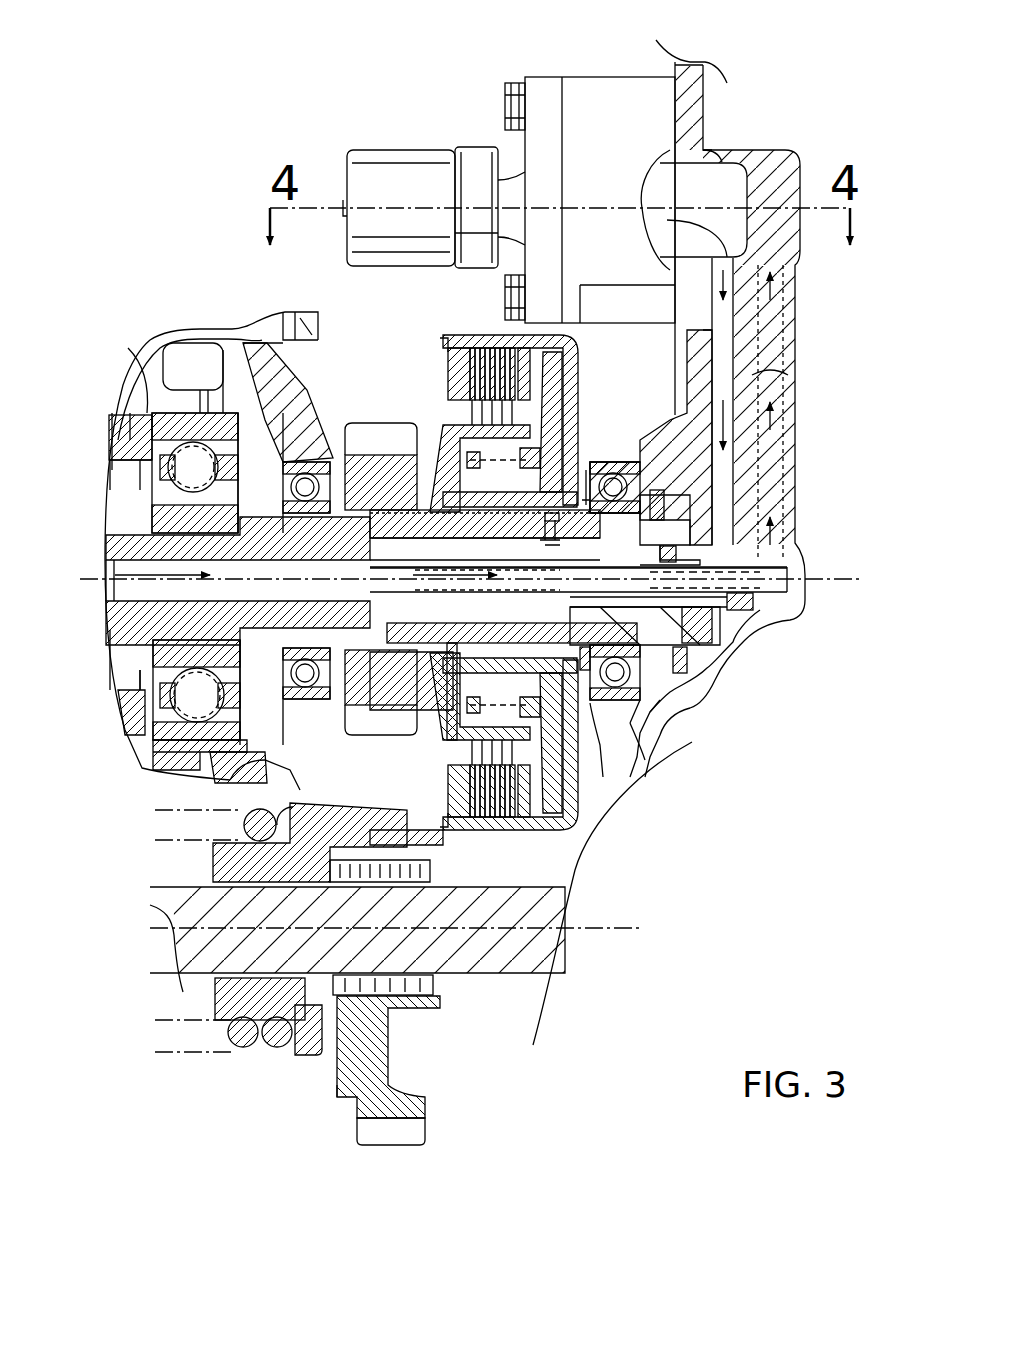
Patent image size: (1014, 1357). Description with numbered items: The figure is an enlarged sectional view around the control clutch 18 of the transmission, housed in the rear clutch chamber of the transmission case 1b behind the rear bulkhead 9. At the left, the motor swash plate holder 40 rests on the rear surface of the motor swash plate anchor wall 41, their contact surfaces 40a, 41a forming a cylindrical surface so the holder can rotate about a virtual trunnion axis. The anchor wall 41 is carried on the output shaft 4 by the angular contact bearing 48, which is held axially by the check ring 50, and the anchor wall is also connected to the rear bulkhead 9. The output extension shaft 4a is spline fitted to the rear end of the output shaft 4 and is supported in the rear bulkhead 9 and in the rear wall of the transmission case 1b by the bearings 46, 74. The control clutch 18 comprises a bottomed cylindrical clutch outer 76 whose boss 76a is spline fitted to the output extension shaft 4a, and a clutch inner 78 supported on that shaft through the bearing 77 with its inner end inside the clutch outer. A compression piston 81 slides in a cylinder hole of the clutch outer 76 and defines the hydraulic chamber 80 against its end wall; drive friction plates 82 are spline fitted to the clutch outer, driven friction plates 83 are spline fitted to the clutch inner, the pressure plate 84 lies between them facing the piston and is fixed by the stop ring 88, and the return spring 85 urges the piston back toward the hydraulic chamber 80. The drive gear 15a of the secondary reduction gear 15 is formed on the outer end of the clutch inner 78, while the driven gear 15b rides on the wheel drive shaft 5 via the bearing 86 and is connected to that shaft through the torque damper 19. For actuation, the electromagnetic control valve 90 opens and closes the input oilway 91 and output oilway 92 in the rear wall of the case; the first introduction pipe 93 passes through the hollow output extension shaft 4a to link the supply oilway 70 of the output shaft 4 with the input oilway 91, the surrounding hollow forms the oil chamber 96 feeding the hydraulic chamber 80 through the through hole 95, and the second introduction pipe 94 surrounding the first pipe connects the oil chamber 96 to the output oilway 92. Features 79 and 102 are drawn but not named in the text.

The transmission case 1b is at (690, 100).
The output shaft 4 is at (112, 547).
The output extension shaft 4a is at (717, 643).
The wheel drive shaft 5 is at (553, 960).
The rear bulkhead 9 is at (305, 332).
The secondary reduction gear 15 is at (405, 1147).
The drive gear 15a is at (360, 430).
The driven gear 15b is at (352, 1098).
The control clutch 18 is at (582, 385).
The torque damper 19 is at (257, 1052).
The motor swash plate holder 40 is at (130, 430).
The contact surface 40a is at (135, 400).
The motor swash plate anchor wall 41 is at (168, 358).
The contact surface 41a is at (115, 460).
The bearing 46 is at (300, 485).
The angular contact bearing 48 is at (187, 473).
The check ring 50 is at (237, 560).
The supply oilway 70 is at (118, 585).
The bearing 74 is at (613, 478).
The clutch outer 76 is at (485, 333).
The boss 76a is at (480, 533).
The bearing 77 is at (402, 455).
The clutch inner 78 is at (443, 425).
The clutch drum 79 is at (583, 800).
The hydraulic chamber 80 is at (602, 782).
The compression piston 81 is at (562, 403).
The drive friction plates 82 is at (520, 825).
The driven friction plates 83 is at (478, 742).
The pressure plate 84 is at (470, 770).
The return spring 85 is at (632, 727).
The bearing 86 is at (410, 1003).
The stop ring 88 is at (453, 835).
The electromagnetic control valve 90 is at (588, 70).
The input oilway 91 is at (772, 448).
The output oilway 92 is at (730, 320).
The first introduction pipe 93 is at (433, 592).
The second introduction pipe 94 is at (662, 520).
The through hole 95 is at (547, 527).
The oil chamber 96 is at (690, 660).
The solenoid valve 102 is at (430, 226).